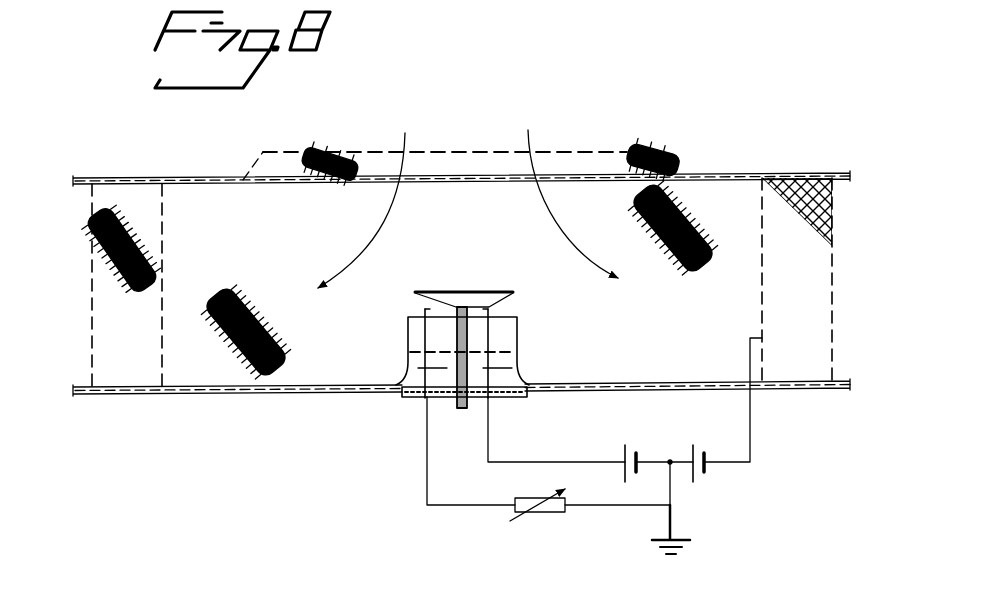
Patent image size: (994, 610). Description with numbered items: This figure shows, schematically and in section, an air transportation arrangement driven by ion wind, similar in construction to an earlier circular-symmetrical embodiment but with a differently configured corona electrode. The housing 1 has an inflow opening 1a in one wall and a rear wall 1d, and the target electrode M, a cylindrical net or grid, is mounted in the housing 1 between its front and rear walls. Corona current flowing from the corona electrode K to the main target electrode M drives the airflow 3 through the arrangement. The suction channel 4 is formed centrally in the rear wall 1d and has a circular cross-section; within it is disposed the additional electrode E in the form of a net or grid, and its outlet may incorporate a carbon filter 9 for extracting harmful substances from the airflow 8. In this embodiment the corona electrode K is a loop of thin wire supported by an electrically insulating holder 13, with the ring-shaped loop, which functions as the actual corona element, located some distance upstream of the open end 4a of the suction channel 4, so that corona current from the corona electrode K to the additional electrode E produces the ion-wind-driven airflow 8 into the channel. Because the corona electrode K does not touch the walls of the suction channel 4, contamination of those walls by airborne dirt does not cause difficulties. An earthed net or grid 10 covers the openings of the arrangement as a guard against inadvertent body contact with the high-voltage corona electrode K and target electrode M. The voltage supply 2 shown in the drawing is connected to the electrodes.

The housing 1 is at (461, 274).
The inflow opening 1a is at (583, 176).
The rear wall 1d is at (642, 389).
The voltage source battery 2 is at (686, 452).
The airflow 3 is at (528, 130).
The suction channel 4 is at (458, 339).
The open end of the suction channel 4a is at (422, 311).
The airflow 8 is at (430, 324).
The carbon filter 9 is at (506, 398).
The earthed net or grid 10 is at (387, 151).
The electrically insulating holder 13 is at (462, 403).
The additional electrode E is at (517, 352).
The corona electrode K is at (485, 292).
The target electrode M is at (162, 244).